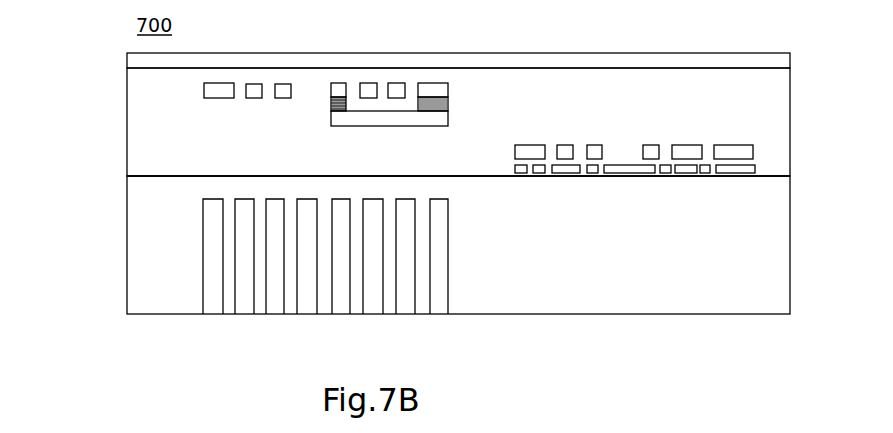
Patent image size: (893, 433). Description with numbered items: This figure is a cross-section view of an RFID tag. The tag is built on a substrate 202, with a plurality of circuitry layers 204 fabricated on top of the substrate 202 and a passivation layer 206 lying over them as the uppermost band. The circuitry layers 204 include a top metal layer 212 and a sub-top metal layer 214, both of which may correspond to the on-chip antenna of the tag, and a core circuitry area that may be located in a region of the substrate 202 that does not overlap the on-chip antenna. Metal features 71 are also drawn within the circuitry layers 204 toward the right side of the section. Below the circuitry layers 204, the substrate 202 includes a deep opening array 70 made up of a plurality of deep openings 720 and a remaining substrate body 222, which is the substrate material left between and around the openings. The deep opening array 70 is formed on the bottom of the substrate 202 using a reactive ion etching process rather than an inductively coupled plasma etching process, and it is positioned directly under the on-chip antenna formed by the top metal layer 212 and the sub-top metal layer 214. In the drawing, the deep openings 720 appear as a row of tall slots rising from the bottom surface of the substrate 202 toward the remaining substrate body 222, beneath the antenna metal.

The passivation layer 206 is at (133, 61).
The circuitry layers 204 is at (120, 122).
The substrate 202 is at (121, 237).
The remaining substrate body 222 is at (283, 185).
The top metal layer 212 is at (219, 92).
The sub-top metal layer 214 is at (385, 118).
The metal lines 71 is at (744, 137).
The deep opening array 70 is at (273, 319).
The deep openings 720 is at (340, 290).